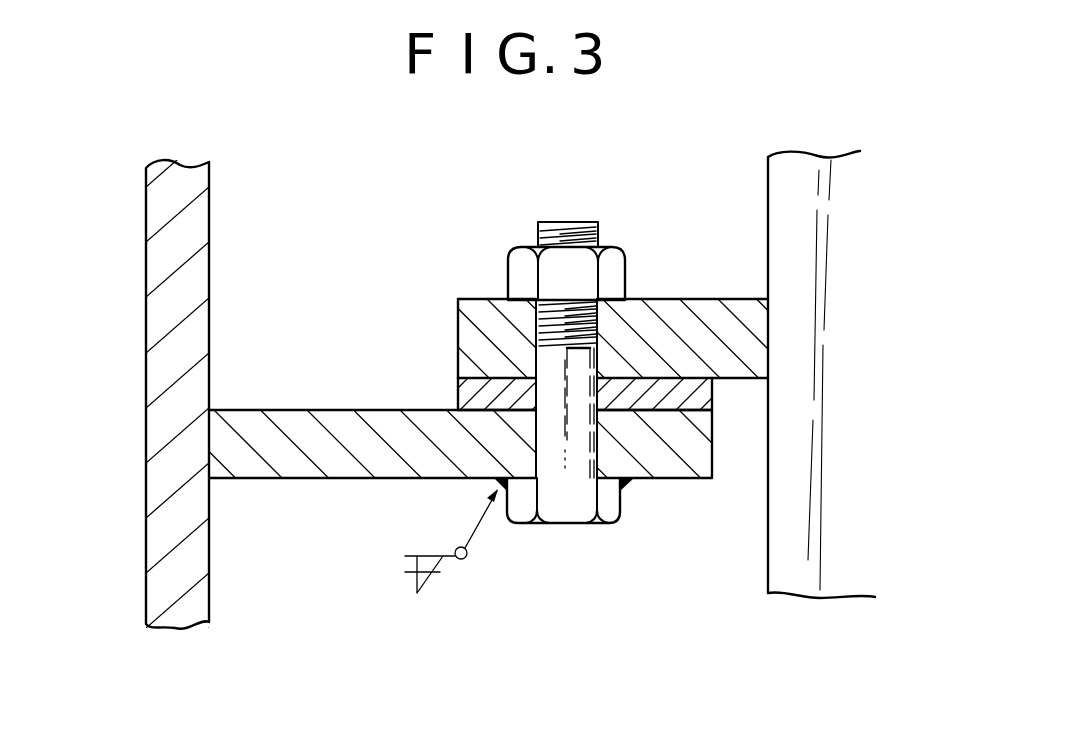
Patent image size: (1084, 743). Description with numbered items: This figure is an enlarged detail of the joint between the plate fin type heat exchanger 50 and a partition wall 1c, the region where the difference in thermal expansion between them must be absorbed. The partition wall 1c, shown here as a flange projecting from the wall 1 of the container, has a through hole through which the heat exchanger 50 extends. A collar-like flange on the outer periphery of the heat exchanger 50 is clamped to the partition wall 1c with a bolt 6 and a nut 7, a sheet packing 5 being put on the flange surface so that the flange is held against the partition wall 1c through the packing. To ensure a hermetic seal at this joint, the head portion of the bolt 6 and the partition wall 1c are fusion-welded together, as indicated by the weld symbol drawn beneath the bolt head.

The container 1 is at (211, 229).
The partition wall 1c is at (322, 409).
The sheet packing 5 is at (458, 395).
The bolt 6 is at (622, 498).
The nut 7 is at (508, 272).
The plate fin type heat exchanger 50 is at (768, 196).